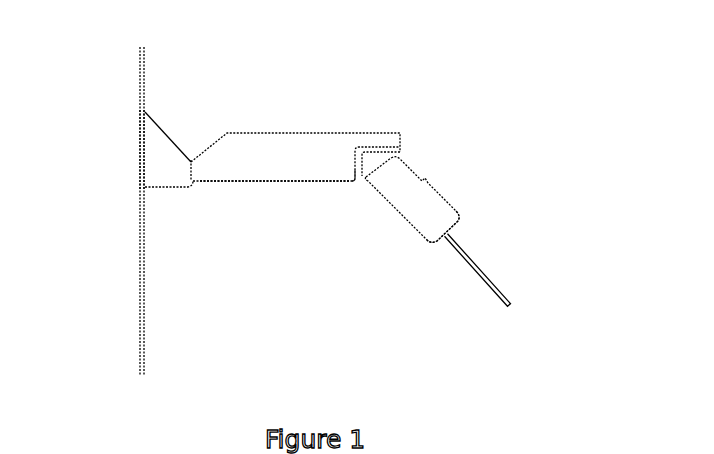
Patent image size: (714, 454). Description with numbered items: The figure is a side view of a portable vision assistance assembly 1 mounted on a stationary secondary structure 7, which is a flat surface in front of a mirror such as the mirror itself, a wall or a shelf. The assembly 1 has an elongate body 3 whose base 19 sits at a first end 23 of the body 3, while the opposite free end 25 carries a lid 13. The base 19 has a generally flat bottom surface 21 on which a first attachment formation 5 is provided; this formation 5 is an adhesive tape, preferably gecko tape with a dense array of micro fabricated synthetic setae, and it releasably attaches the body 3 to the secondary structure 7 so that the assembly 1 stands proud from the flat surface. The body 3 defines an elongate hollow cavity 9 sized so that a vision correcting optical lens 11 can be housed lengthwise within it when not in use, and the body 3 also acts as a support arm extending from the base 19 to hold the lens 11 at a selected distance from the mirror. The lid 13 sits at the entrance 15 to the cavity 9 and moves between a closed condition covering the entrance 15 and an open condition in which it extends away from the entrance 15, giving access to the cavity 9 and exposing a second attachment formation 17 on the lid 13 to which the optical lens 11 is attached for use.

The portable vision assistance assembly 1 is at (200, 50).
The body 3 is at (291, 114).
The first attachment formation 5 is at (132, 148).
The secondary structure 7 is at (142, 268).
The cavity 9 is at (305, 176).
The vision correcting optical lens 11 is at (503, 290).
The lid 13 is at (428, 196).
The entrance 15 is at (422, 149).
The second attachment formation 17 is at (468, 223).
The base 19 is at (160, 163).
The bottom surface 21 is at (143, 125).
The first end 23 is at (197, 198).
The free end 25 is at (362, 199).